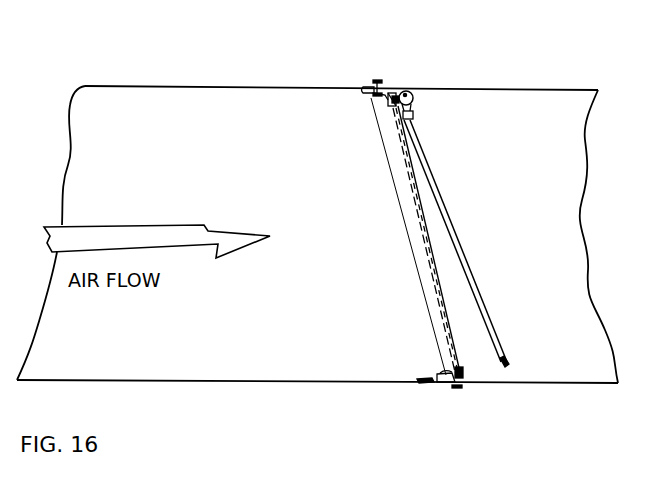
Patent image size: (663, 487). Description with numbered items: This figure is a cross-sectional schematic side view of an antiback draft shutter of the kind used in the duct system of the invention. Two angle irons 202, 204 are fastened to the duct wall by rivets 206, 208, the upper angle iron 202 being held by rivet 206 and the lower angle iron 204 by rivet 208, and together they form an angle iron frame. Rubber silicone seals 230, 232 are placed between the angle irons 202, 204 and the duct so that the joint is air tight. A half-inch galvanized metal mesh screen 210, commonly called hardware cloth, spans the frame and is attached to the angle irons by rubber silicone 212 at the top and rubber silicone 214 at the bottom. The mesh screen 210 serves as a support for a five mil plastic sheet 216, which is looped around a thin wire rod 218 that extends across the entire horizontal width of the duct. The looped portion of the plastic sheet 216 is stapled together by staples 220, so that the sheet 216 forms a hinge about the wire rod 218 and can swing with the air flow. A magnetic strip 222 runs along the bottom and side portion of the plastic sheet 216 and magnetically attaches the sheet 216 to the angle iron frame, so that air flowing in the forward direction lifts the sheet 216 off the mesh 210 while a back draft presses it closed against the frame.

The angle iron 202 is at (397, 96).
The angle iron 204 is at (465, 377).
The rivet 206 is at (378, 80).
The rivet 208 is at (456, 390).
The galvanized metal mesh screen 210 is at (432, 262).
The rubber silicone 212 is at (389, 104).
The rubber silicone 214 is at (437, 374).
The plastic sheet 216 is at (441, 202).
The wire rod 218 is at (411, 90).
The staples 220 is at (414, 117).
The magnetic strip 222 is at (507, 356).
The rubber silicone seal 230 is at (362, 92).
The rubber silicone seal 232 is at (416, 382).